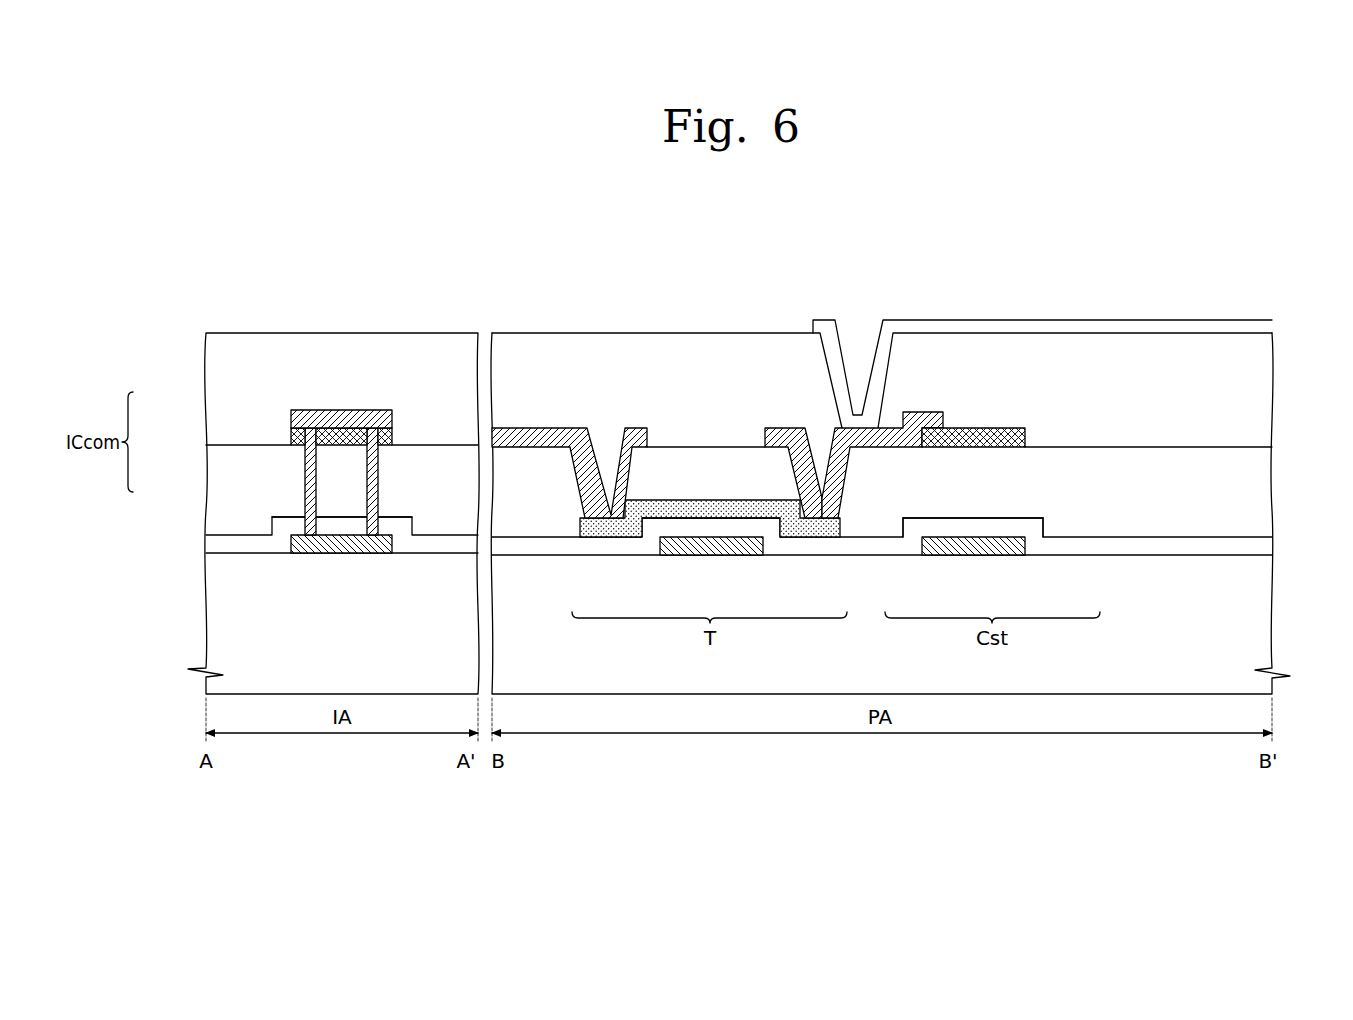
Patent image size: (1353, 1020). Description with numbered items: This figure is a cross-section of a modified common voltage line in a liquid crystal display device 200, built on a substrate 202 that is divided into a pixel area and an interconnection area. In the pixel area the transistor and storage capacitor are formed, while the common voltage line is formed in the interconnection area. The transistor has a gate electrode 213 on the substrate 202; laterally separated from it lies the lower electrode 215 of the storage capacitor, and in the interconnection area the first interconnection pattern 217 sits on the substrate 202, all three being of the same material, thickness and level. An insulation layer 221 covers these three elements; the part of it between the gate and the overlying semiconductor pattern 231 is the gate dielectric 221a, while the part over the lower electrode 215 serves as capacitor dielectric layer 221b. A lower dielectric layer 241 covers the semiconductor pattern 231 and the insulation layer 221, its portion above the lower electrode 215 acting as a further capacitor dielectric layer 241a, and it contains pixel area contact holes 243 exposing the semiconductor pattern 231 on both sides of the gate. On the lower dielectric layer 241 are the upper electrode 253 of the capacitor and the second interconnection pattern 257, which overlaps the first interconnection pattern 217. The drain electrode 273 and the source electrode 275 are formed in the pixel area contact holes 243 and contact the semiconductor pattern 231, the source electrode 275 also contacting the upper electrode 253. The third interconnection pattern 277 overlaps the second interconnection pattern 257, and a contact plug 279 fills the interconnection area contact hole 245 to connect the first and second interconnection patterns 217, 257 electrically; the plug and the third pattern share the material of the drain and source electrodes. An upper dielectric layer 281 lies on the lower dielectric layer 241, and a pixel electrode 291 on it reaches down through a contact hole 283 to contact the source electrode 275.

The display substrate 200 is at (1089, 278).
The substrate 202 is at (218, 608).
The gate electrode 213 is at (677, 548).
The lower electrode 215 is at (1015, 548).
The first interconnection pattern 217 is at (290, 546).
The insulation layer 221 is at (218, 548).
The gate dielectric 221a is at (718, 527).
The capacitor dielectric layer 221b is at (995, 528).
The semiconductor pattern 231 is at (746, 512).
The lower dielectric layer 241 is at (218, 517).
The capacitor dielectric layer 241a is at (960, 507).
The pixel area contact hole 243 is at (832, 478).
The interconnection area contact hole 245 is at (372, 478).
The upper electrode 253 is at (958, 447).
The second interconnection pattern 257 is at (291, 437).
The drain electrode 273 is at (605, 527).
The source electrode 275 is at (822, 528).
The third interconnection pattern 277 is at (291, 420).
The contact plug 279 is at (306, 485).
The upper dielectric layer 281 is at (218, 371).
The contact hole 283 is at (880, 368).
The pixel electrode 291 is at (1258, 331).